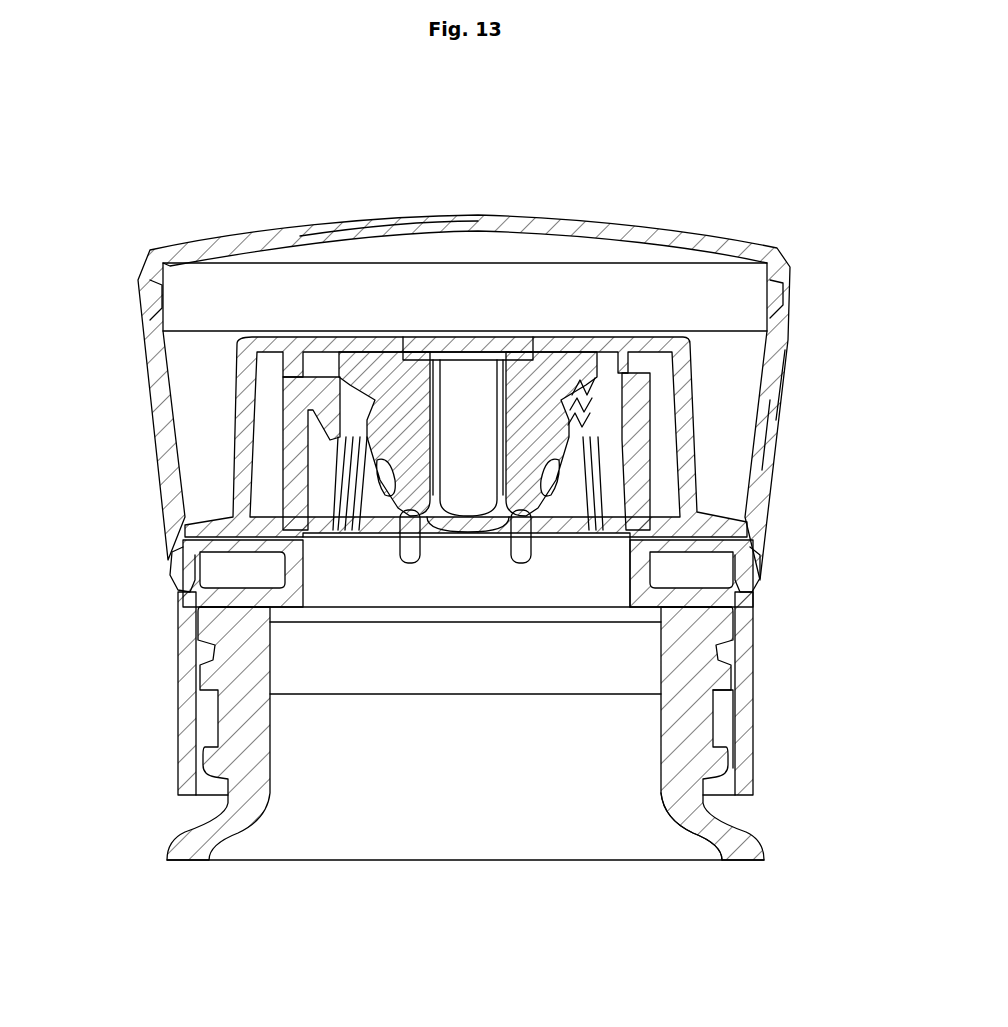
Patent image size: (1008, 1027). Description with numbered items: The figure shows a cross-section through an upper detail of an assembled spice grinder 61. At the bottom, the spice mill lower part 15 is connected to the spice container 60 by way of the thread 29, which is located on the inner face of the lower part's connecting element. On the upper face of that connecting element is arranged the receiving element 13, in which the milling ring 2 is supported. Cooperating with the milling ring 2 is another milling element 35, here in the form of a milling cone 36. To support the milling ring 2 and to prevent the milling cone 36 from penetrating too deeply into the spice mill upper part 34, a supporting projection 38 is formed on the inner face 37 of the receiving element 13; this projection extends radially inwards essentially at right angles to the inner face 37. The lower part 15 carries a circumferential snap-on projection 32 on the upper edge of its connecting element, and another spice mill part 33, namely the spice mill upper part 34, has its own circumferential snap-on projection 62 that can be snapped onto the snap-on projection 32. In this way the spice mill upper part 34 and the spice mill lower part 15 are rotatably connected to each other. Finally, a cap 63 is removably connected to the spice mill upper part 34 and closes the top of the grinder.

The spice grinder 61 is at (214, 210).
The cap 63 is at (348, 232).
The spice mill upper part 34 is at (777, 388).
The spice mill part 33 is at (777, 415).
The receiving element 13 is at (635, 497).
The milling ring 2 is at (318, 396).
The milling element 35 is at (546, 380).
The milling cone 36 is at (576, 374).
The circumferential snap-on projection 32 is at (190, 565).
The circumferential snap-on projection 62 is at (180, 580).
The inner face 37 is at (618, 578).
The supporting projection 38 is at (408, 553).
The spice mill lower part 15 is at (742, 632).
The thread 29 is at (735, 677).
The spice container 60 is at (735, 840).